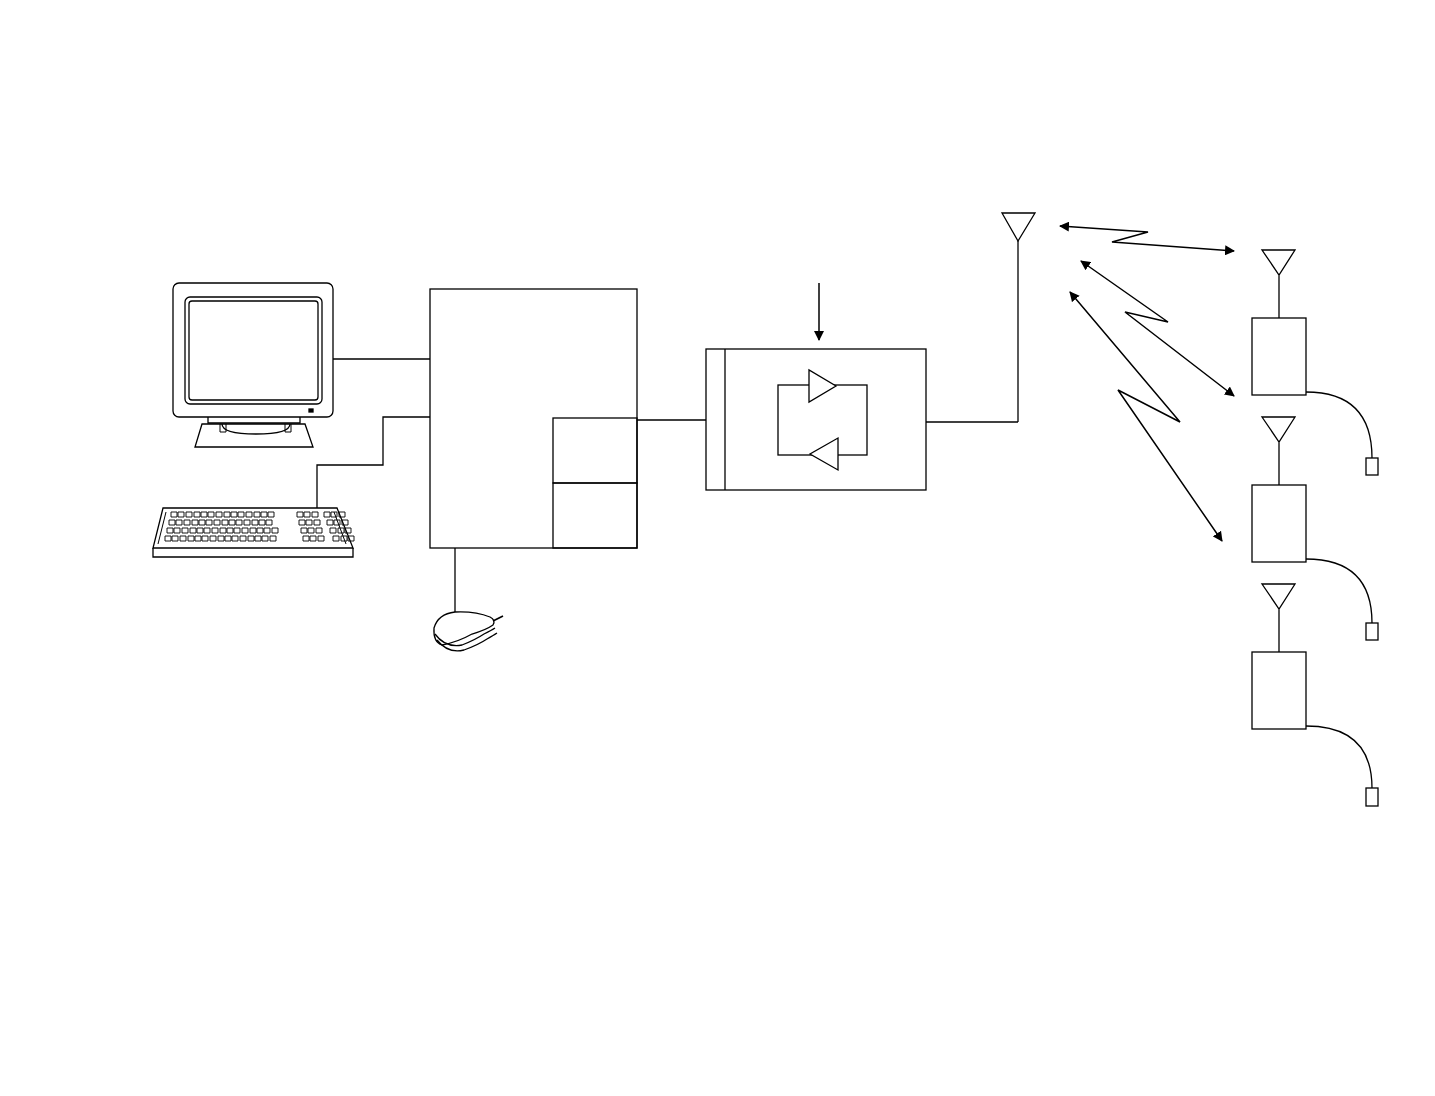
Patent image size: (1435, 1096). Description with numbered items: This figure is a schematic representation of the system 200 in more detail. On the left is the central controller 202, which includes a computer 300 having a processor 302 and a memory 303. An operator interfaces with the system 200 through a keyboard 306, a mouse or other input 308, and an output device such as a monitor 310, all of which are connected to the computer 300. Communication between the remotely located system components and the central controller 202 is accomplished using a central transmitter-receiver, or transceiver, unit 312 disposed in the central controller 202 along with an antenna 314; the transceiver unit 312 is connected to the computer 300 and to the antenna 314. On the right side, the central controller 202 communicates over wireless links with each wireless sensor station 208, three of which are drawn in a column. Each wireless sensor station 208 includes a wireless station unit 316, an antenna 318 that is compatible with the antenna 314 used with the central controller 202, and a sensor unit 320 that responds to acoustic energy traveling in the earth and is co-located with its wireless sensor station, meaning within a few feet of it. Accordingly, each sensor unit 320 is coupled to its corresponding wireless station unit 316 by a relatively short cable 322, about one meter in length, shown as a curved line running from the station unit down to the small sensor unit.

The system 200 is at (703, 162).
The central controller 202 is at (297, 663).
The wireless sensor station 208 is at (1300, 372).
The computer 300 is at (396, 253).
The processor 302 is at (618, 533).
The memory 303 is at (618, 468).
The keyboard 306 is at (172, 557).
The mouse or other input 308 is at (492, 613).
The monitor 310 is at (186, 283).
The central transmitter-receiver unit 312 is at (813, 490).
The antenna 314 is at (1014, 213).
The wireless station unit 316 is at (1056, 661).
The antenna 318 is at (1093, 582).
The sensor unit 320 is at (1123, 777).
The cable 322 is at (1346, 396).